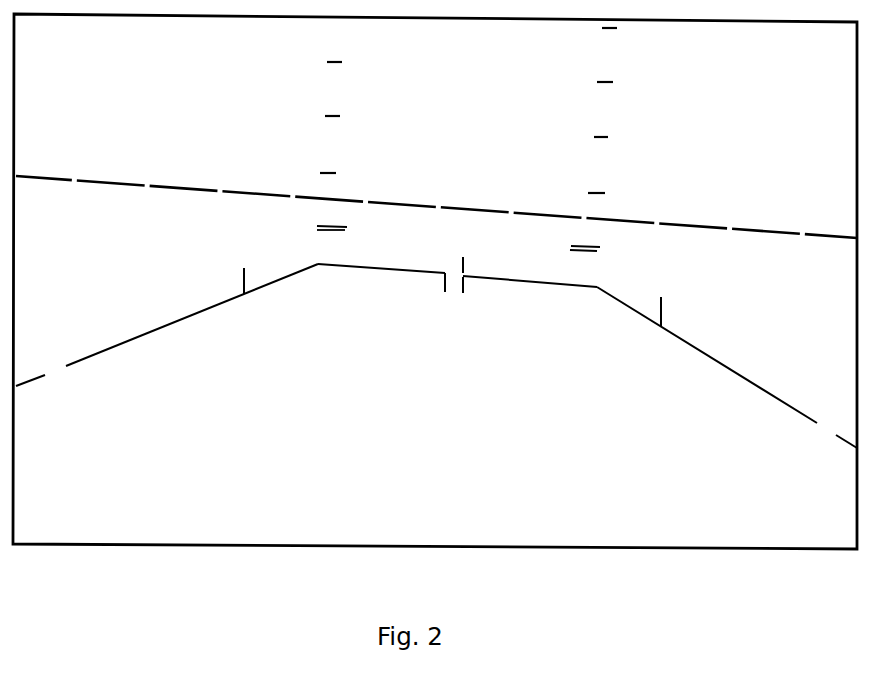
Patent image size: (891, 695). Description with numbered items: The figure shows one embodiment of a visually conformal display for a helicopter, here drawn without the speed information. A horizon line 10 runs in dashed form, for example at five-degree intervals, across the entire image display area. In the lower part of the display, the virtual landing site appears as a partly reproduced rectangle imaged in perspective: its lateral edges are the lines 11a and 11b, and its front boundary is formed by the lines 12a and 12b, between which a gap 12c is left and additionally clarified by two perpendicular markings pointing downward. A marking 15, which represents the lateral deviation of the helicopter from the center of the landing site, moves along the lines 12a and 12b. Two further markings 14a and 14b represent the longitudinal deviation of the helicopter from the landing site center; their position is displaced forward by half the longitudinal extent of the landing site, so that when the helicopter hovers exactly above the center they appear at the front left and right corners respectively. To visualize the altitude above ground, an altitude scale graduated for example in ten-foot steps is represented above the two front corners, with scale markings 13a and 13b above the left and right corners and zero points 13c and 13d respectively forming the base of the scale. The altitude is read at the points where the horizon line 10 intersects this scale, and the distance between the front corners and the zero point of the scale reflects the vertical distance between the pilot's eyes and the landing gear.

The horizon line 10 is at (178, 182).
The lateral edge line of landing site 11a is at (182, 318).
The lateral edge line of landing site 11b is at (740, 375).
The front boundary line of landing site 12a is at (398, 272).
The front boundary line of landing site 12b is at (520, 283).
The gap 12c is at (450, 295).
The altitude scale marking 13a is at (347, 132).
The altitude scale marking 13b is at (640, 146).
The zero point of altitude scale 13c is at (350, 231).
The zero point of altitude scale 13d is at (602, 250).
The longitudinal deviation marking 14a is at (244, 268).
The longitudinal deviation marking 14b is at (661, 297).
The lateral deviation marking 15 is at (463, 262).